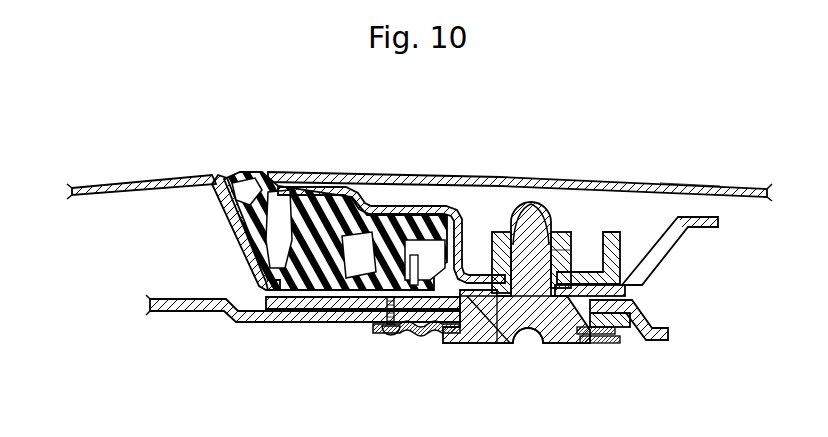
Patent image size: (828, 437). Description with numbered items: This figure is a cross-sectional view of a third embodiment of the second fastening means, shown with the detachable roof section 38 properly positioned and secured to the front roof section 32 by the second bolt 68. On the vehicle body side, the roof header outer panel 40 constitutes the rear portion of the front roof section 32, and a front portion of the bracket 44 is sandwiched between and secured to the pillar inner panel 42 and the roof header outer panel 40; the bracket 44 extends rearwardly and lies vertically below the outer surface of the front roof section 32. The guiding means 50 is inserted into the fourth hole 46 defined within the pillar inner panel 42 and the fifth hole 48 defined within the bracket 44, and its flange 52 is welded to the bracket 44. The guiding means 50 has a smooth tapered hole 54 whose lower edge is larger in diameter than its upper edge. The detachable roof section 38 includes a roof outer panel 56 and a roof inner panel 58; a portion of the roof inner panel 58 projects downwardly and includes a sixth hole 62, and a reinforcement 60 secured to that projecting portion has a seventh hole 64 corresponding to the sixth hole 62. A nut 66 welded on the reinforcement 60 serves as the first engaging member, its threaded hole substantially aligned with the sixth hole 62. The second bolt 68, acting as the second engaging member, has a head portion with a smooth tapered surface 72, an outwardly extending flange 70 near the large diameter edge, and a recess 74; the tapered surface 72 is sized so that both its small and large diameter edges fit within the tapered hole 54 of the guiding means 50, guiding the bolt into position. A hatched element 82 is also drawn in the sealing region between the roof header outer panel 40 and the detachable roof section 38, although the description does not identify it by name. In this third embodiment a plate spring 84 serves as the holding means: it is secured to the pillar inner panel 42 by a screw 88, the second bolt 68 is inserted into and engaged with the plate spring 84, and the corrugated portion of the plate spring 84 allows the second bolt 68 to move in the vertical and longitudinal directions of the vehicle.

The front roof section 32 is at (143, 176).
The detachable roof section 38 is at (745, 178).
The roof header outer panel 40 is at (212, 176).
The pillar inner panel 42 is at (240, 323).
The bracket 44 is at (283, 312).
The fourth hole 46 is at (600, 345).
The fifth hole 48 is at (585, 340).
The guiding means 50 is at (477, 342).
The flange 52 is at (627, 292).
The tapered hole 54 is at (574, 258).
The roof outer panel 56 is at (683, 181).
The roof inner panel 58 is at (708, 228).
The reinforcement 60 is at (430, 203).
The sixth hole 62 is at (550, 200).
The seventh hole 64 is at (521, 200).
The nut 66 is at (561, 247).
The second bolt 68 is at (561, 349).
The flange 70 is at (683, 341).
The tapered surface 72 is at (483, 247).
The recess 74 is at (528, 328).
The elastomeric seal 82 is at (258, 176).
The plate spring 84 is at (427, 336).
The screw 88 is at (380, 339).